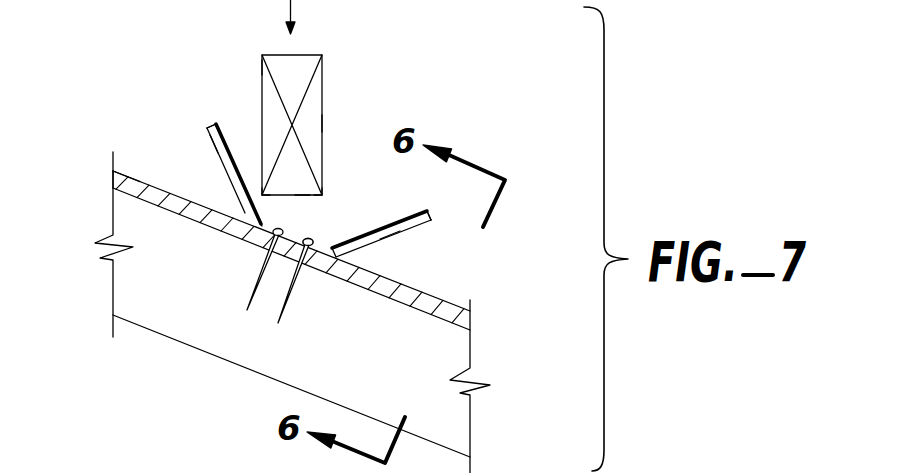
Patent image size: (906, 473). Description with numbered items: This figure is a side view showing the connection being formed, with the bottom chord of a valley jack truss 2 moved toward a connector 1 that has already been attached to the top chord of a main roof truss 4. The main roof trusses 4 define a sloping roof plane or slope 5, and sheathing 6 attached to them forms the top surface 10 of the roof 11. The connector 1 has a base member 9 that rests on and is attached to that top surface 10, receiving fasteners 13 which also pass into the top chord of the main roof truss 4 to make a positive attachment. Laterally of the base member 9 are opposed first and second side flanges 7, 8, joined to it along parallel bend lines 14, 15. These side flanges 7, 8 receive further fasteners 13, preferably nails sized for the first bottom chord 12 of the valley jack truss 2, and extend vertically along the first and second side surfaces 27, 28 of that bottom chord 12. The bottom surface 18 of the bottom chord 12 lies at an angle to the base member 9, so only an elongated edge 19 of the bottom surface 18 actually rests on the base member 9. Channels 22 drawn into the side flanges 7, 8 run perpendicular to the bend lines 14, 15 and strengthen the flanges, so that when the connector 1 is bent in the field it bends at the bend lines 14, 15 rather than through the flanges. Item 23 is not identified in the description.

The connector 1 is at (213, 120).
The valley jack truss 2 is at (301, 55).
The main roof truss 4 is at (473, 434).
The slope 5 is at (311, 250).
The sheathing 6 is at (463, 305).
The first side flange 7 is at (206, 129).
The second side flange 8 is at (405, 213).
The base member 9 is at (303, 230).
The top surface 10 is at (134, 176).
The roof 11 is at (111, 174).
The first bottom chord 12 is at (323, 83).
The fasteners 13 is at (281, 307).
The first bend line 14 is at (262, 228).
The second bend line 15 is at (326, 253).
The bottom surface 18 is at (300, 199).
The elongated edge 19 is at (262, 195).
The channels 22 is at (214, 152).
The blade end 23 is at (431, 213).
The first side surface 27 is at (262, 67).
The second side surface 28 is at (322, 124).